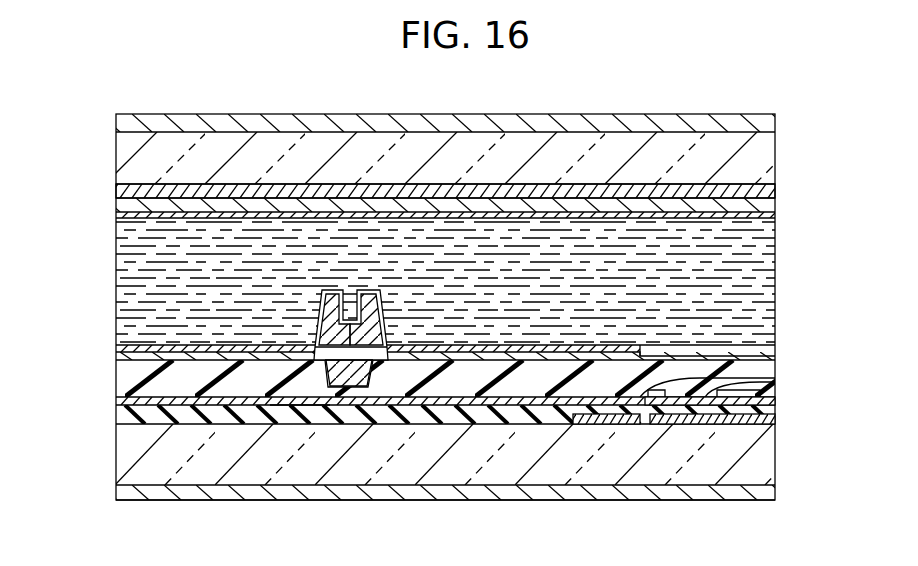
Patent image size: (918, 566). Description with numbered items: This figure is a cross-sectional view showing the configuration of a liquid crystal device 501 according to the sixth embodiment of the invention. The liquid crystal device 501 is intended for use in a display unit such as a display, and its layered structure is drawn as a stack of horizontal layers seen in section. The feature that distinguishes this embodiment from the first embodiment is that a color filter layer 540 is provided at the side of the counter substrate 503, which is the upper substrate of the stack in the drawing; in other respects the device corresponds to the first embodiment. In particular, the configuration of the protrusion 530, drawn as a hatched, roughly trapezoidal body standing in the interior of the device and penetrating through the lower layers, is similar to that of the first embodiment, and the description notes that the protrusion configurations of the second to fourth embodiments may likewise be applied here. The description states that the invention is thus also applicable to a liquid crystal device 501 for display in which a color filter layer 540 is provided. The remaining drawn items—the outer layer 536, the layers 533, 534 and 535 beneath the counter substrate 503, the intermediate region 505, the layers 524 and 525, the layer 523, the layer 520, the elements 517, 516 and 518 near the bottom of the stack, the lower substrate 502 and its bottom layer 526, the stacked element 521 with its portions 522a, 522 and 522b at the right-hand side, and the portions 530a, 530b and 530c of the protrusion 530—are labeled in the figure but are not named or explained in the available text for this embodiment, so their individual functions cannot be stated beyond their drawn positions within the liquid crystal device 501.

The liquid crystal device 501 is at (660, 89).
The compliance substrate 536 is at (770, 122).
The counter substrate 503 is at (765, 152).
The adhesive layer 533 is at (770, 190).
The color filter layer 540 is at (118, 190).
The protective film 534 is at (770, 208).
The sealing film 535 is at (770, 216).
The manifold 505 is at (770, 290).
The communicating plate 524 is at (118, 354).
The insulating film 525 is at (778, 357).
The flow path forming substrate 523 is at (130, 383).
The vibration plate 520 is at (125, 408).
The elastic film 517 is at (603, 425).
The insulator film 516 is at (707, 425).
The pressure generating chamber 518 is at (298, 400).
The nozzle plate 502 is at (765, 462).
The nozzle 526 is at (765, 493).
The piezoelectric actuator 521 is at (779, 384).
The first electrode 522a is at (775, 400).
The piezoelectric layer 522 is at (700, 390).
The second electrode 522b is at (700, 379).
The protrusion 530 is at (331, 398).
The first wall portion 530a is at (333, 290).
The second wall portion 530b is at (357, 290).
The coating layer 530c is at (315, 318).